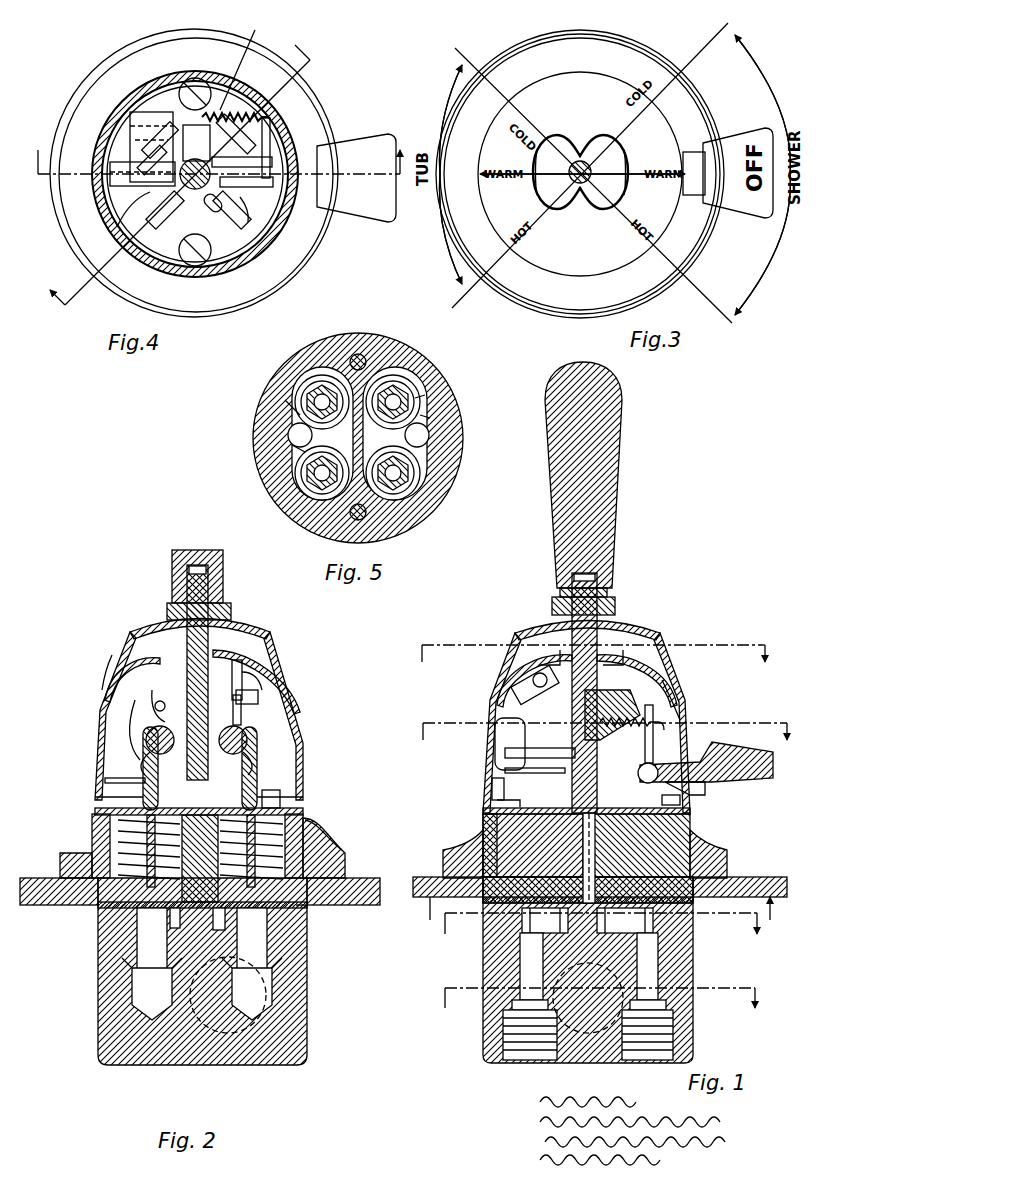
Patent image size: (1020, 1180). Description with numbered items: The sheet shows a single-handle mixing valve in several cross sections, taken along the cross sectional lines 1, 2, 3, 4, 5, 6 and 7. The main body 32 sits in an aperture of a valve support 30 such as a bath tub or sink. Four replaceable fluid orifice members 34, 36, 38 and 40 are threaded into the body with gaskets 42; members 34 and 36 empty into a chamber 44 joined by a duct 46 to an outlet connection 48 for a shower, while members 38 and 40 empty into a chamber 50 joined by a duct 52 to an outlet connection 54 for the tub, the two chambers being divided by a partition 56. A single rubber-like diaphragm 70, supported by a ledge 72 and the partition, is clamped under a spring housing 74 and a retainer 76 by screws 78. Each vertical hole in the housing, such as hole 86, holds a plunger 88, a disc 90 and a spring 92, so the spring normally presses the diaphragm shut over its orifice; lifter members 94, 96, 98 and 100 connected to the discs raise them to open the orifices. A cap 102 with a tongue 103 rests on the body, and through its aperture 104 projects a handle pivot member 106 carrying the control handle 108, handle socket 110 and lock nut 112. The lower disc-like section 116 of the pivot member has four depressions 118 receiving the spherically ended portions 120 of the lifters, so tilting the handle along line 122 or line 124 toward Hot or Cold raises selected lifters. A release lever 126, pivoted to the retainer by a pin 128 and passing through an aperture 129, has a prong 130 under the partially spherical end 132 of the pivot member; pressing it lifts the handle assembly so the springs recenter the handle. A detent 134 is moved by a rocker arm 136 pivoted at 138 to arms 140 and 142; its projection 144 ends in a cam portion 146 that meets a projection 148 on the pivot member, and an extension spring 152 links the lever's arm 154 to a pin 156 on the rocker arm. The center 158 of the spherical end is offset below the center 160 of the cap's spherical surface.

In FIG. 2, the valve support 30 is at (345, 878).
In FIG. 1, the valve support 30 is at (760, 877).
In FIG. 4, the main body 32 is at (272, 280).
In FIG. 3, the main body 32 is at (612, 303).
In FIG. 5, the main body 32 is at (435, 500).
In FIG. 2, the main body 32 is at (307, 1000).
In FIG. 1, the main body 32 is at (693, 975).
In FIG. 5, the fluid orifice member 34 is at (298, 392).
In FIG. 2, the fluid orifice member 34 is at (137, 935).
In FIG. 5, the fluid orifice member 36 is at (300, 478).
In FIG. 5, the fluid orifice member 38 is at (420, 385).
In FIG. 5, the fluid orifice member 40 is at (415, 470).
In FIG. 2, the fluid orifice member 40 is at (272, 935).
In FIG. 2, the gasket 42 is at (282, 962).
In FIG. 5, the chamber 44 is at (292, 448).
In FIG. 5, the duct 46 is at (290, 434).
In FIG. 1, the duct 46 is at (525, 968).
In FIG. 5, the outlet connection 48 is at (285, 410).
In FIG. 1, the outlet connection 48 is at (525, 1050).
In FIG. 5, the chamber 50 is at (425, 398).
In FIG. 5, the duct 52 is at (430, 435).
In FIG. 1, the duct 52 is at (650, 955).
In FIG. 5, the outlet connection 54 is at (430, 418).
In FIG. 1, the outlet connection 54 is at (673, 1050).
In FIG. 5, the partition 56 is at (390, 368).
In FIG. 2, the partition 56 is at (110, 1025).
In FIG. 1, the partition 56 is at (653, 930).
In FIG. 2, the diaphragm 70 is at (307, 910).
In FIG. 1, the diaphragm 70 is at (730, 870).
In FIG. 2, the ledge 72 is at (110, 905).
In FIG. 1, the ledge 72 is at (445, 877).
In FIG. 2, the spring housing 74 is at (303, 812).
In FIG. 1, the spring housing 74 is at (680, 834).
In FIG. 2, the retainer 76 is at (92, 822).
In FIG. 1, the retainer 76 is at (490, 818).
In FIG. 4, the screw 78 is at (205, 258).
In FIG. 5, the screw 78 is at (368, 516).
In FIG. 2, the screw 78 is at (268, 790).
In FIG. 1, the screw 78 is at (522, 928).
In FIG. 2, the vertical cylindrical hole 86 is at (312, 836).
In FIG. 2, the plunger 88 is at (345, 858).
In FIG. 2, the disc 90 is at (60, 853).
In FIG. 2, the spring 92 is at (300, 840).
In FIG. 4, the lifter member 94 is at (140, 140).
In FIG. 2, the lifter member 94 is at (143, 768).
In FIG. 4, the lifter member 96 is at (118, 216).
In FIG. 4, the lifter member 98 is at (258, 110).
In FIG. 4, the lifter member 100 is at (247, 212).
In FIG. 2, the lifter member 100 is at (250, 752).
In FIG. 4, the cap 102 is at (270, 228).
In FIG. 3, the cap 102 is at (610, 80).
In FIG. 2, the cap 102 is at (118, 640).
In FIG. 1, the cap 102 is at (503, 685).
In FIG. 1, the tongue 103 is at (492, 788).
In FIG. 3, the aperture 104 is at (568, 200).
In FIG. 2, the aperture 104 is at (270, 660).
In FIG. 1, the aperture 104 is at (545, 660).
In FIG. 4, the handle pivot member 106 is at (182, 200).
In FIG. 3, the handle pivot member 106 is at (578, 160).
In FIG. 2, the handle pivot member 106 is at (209, 588).
In FIG. 1, the handle pivot member 106 is at (598, 585).
In FIG. 2, the control handle 108 is at (223, 560).
In FIG. 1, the control handle 108 is at (612, 485).
In FIG. 2, the handle socket 110 is at (275, 636).
In FIG. 1, the handle socket 110 is at (662, 638).
In FIG. 2, the lock nut 112 is at (240, 622).
In FIG. 1, the lock nut 112 is at (630, 625).
In FIG. 4, the disc-like section 116 is at (220, 215).
In FIG. 2, the disc-like section 116 is at (148, 760).
In FIG. 4, the depression 118 is at (255, 206).
In FIG. 2, the depression 118 is at (247, 736).
In FIG. 2, the spherically ended portion 120 is at (242, 715).
In FIG. 3, the line 122 is at (695, 55).
In FIG. 3, the line 124 is at (700, 295).
In FIG. 4, the release lever 126 is at (367, 136).
In FIG. 3, the release lever 126 is at (740, 138).
In FIG. 1, the release lever 126 is at (725, 760).
In FIG. 1, the pin 128 is at (680, 800).
In FIG. 1, the aperture 129 is at (705, 788).
In FIG. 2, the prong 130 is at (95, 797).
In FIG. 1, the prong 130 is at (497, 836).
In FIG. 2, the partially spherical end 132 is at (105, 781).
In FIG. 1, the partially spherical end 132 is at (505, 770).
In FIG. 1, the detent 134 is at (497, 802).
In FIG. 1, the rocker arm 136 is at (495, 735).
In FIG. 1, the pivot 138 is at (515, 688).
In FIG. 4, the arm 140 is at (150, 112).
In FIG. 4, the arm 142 is at (110, 184).
In FIG. 2, the arm 142 is at (130, 700).
In FIG. 4, the projection 144 is at (170, 100).
In FIG. 2, the projection 144 is at (258, 700).
In FIG. 1, the projection 144 is at (565, 595).
In FIG. 2, the cam portion 146 is at (262, 688).
In FIG. 1, the cam portion 146 is at (600, 700).
In FIG. 2, the projection 148 is at (243, 672).
In FIG. 1, the projection 148 is at (603, 672).
In FIG. 4, the extension spring 152 is at (240, 135).
In FIG. 1, the extension spring 152 is at (680, 695).
In FIG. 4, the arm 154 is at (270, 122).
In FIG. 1, the arm 154 is at (660, 716).
In FIG. 4, the pin 156 is at (248, 59).
In FIG. 1, the center 158 is at (653, 735).
In FIG. 1, the center 160 is at (505, 752).
In FIG. 4, the cross sectional line 1 is at (218, 150).
In FIG. 4, the cross sectional line 2 is at (176, 165).
In FIG. 1, the cross sectional line 3 is at (591, 664).
In FIG. 1, the cross sectional line 4 is at (602, 742).
In FIG. 1, the cross sectional line 5 is at (600, 934).
In FIG. 1, the section line 6 is at (599, 1009).
In FIG. 1, the section line 7 is at (598, 917).